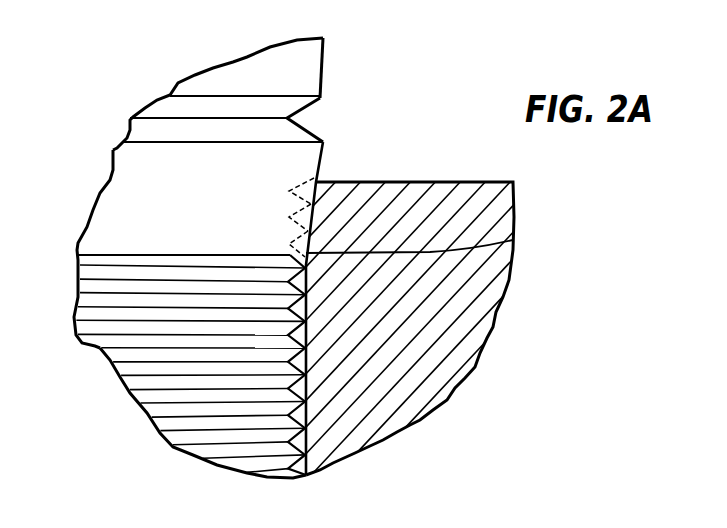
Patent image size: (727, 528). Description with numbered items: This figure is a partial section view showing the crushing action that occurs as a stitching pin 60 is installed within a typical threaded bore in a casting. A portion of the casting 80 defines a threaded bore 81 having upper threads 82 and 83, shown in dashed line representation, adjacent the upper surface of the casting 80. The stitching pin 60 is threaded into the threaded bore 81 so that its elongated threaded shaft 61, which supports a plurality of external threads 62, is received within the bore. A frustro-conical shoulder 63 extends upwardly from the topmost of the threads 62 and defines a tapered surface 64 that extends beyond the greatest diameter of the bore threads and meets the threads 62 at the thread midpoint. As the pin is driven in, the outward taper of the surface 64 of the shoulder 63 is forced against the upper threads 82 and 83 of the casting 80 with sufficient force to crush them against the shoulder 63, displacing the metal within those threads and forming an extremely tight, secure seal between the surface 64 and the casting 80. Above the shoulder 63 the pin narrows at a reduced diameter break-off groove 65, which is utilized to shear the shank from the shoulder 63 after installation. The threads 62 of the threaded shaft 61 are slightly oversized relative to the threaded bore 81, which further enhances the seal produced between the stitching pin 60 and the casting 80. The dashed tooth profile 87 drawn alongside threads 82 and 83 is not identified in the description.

The stitching pin 60 is at (283, 158).
The threaded shaft 61 is at (113, 298).
The external threads 62 is at (513, 240).
The shoulder 63 is at (127, 176).
The tapered surface 64 is at (318, 168).
The break-off groove 65 is at (290, 118).
The casting 80 is at (456, 181).
The threaded bore 81 is at (305, 350).
The upper thread 82 is at (298, 185).
The upper thread 83 is at (292, 207).
The third cutting tooth 87 is at (290, 233).